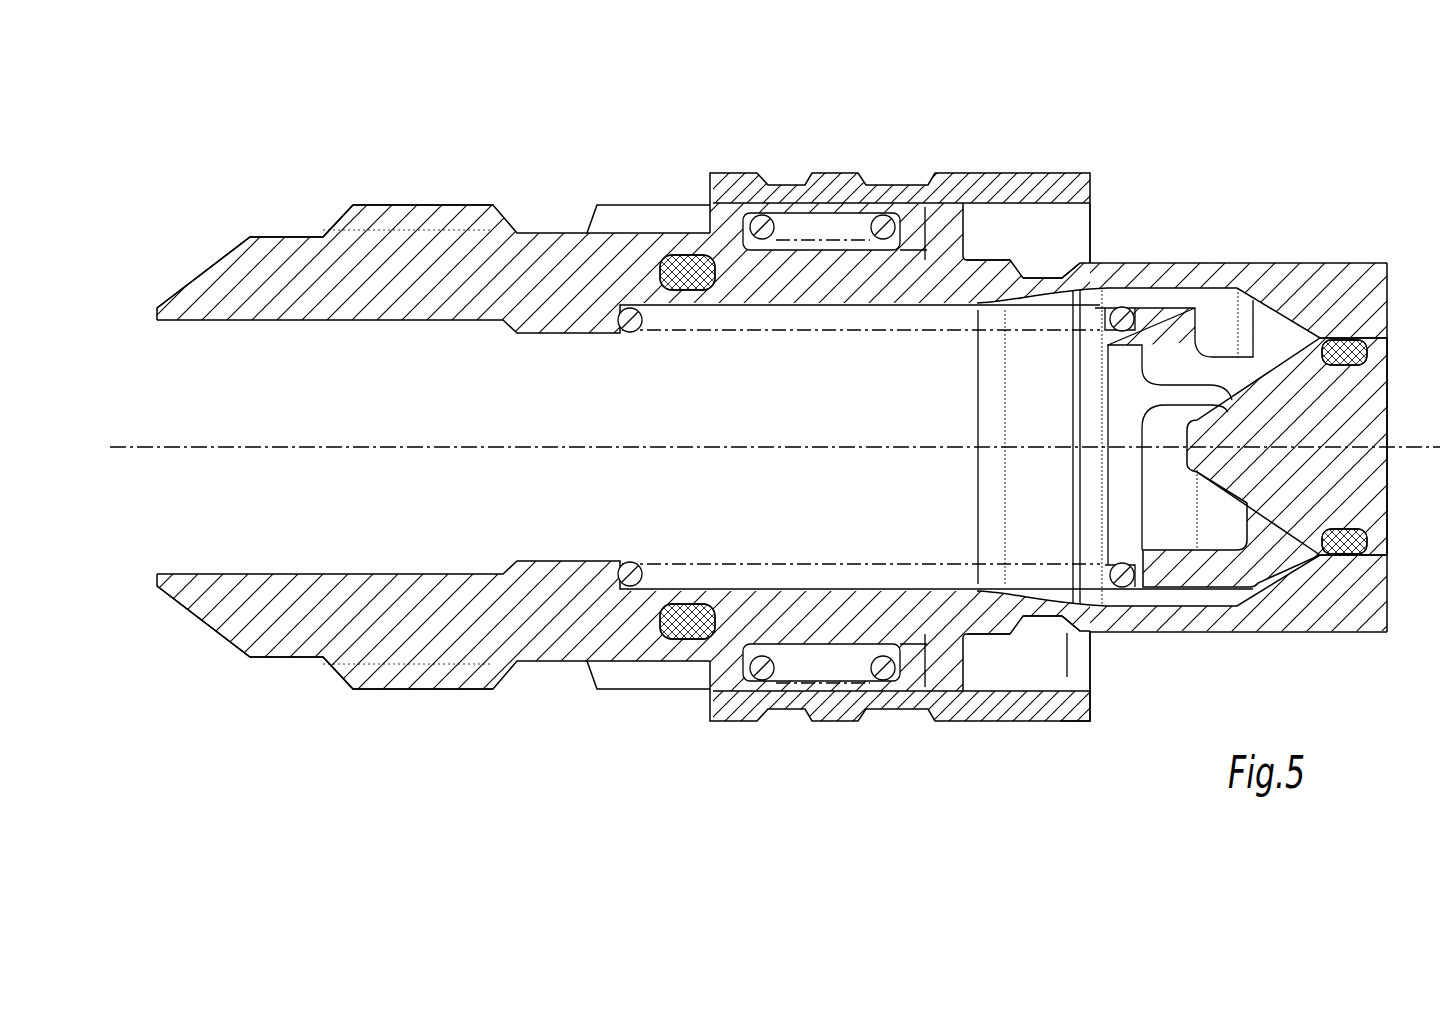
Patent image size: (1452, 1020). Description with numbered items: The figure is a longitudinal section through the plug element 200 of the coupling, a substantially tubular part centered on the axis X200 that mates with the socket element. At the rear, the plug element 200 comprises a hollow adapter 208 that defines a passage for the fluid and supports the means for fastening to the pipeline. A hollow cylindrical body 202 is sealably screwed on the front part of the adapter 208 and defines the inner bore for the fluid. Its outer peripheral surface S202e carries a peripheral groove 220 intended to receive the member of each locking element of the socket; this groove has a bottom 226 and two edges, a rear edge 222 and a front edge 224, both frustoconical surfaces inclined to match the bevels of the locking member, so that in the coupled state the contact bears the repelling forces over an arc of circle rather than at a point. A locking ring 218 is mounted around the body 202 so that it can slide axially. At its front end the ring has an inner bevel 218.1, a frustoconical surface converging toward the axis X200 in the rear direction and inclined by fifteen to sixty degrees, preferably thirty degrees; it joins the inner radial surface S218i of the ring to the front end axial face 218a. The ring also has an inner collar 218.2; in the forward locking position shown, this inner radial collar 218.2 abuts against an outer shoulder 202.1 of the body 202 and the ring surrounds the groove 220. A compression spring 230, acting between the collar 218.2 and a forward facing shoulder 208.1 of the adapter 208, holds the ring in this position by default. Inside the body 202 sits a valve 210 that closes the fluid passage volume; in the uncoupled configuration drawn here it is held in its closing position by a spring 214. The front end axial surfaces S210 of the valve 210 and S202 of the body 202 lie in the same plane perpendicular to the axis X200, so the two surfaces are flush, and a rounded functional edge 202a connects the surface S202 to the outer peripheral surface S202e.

The plug element 200 is at (266, 182).
The hollow adapter 208 is at (297, 285).
The shoulder of the adapter 208.1 is at (777, 195).
The compression spring 230 is at (793, 232).
The outer shoulder of the body 202.1 is at (919, 228).
The inner radial surface of the ring S218i is at (994, 220).
The peripheral groove 220 is at (1398, 150).
The rear edge 222 is at (1015, 258).
The bottom 226 is at (1037, 262).
The front edge 224 is at (1063, 262).
The functional edge 202a is at (1389, 262).
The valve 210 is at (1343, 400).
The front end axial surface of the valve S210 is at (1394, 496).
The front end axial surface of the body S202 is at (1393, 605).
The outer peripheral surface S202e is at (1300, 636).
The hollow cylindrical body 202 is at (1192, 633).
The inner bevel 218.1 is at (1081, 682).
The locking ring 218 is at (1010, 722).
The front end axial face of the ring 218a is at (1104, 721).
The inner collar 218.2 is at (917, 655).
The spring 214 is at (668, 580).
The axis X200 is at (775, 432).